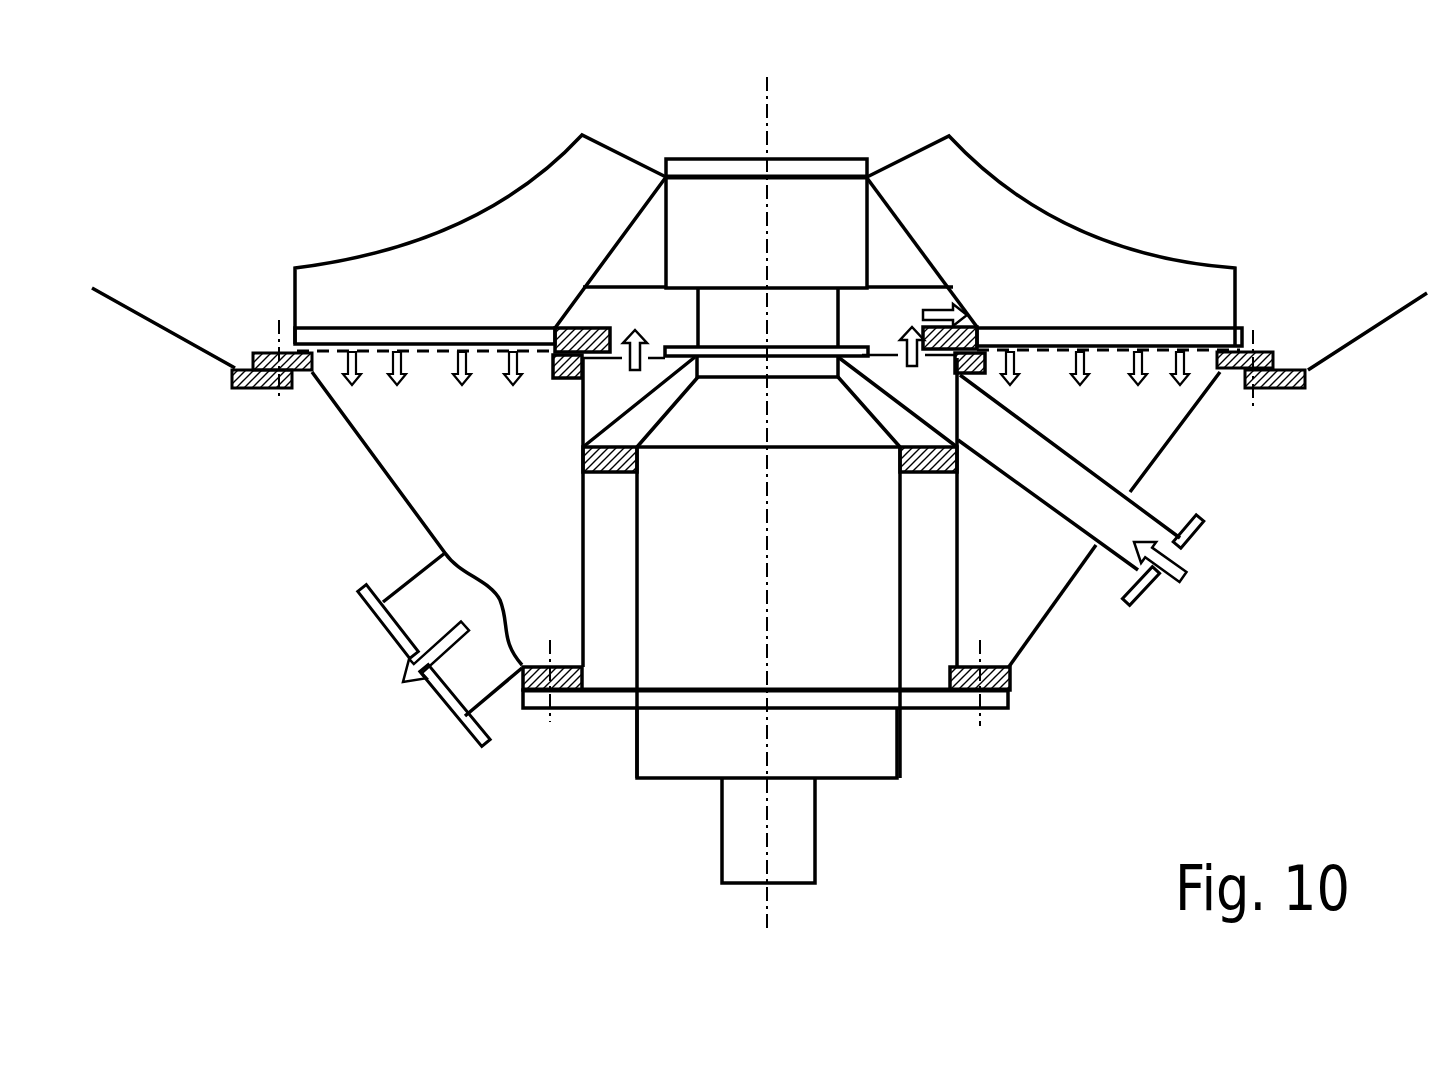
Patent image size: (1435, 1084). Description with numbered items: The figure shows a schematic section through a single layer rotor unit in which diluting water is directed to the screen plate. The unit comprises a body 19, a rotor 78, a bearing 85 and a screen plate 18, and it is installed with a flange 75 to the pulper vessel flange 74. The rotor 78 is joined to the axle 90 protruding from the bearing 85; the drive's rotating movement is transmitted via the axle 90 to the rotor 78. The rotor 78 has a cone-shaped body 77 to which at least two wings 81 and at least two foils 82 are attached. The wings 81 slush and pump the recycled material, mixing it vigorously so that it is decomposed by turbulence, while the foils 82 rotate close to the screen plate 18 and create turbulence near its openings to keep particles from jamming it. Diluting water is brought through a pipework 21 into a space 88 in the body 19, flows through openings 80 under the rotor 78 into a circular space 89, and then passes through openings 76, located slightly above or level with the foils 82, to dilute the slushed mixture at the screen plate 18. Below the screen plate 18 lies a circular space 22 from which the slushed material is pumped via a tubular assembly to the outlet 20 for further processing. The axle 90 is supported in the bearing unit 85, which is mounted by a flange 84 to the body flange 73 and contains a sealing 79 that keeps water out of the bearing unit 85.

The screen plate 18 is at (1097, 357).
The body 19 is at (1048, 615).
The outlet 20 is at (438, 585).
The pipework 21 is at (1186, 537).
The circular space 22 is at (447, 432).
The body flange 73 is at (1010, 690).
The pulper vessel flange 74 is at (1288, 392).
The flange 75 is at (1245, 365).
The openings 76 is at (963, 303).
The cone-shaped body 77 is at (903, 215).
The rotor 78 is at (768, 222).
The sealing 79 is at (725, 323).
The openings 80 is at (620, 355).
The wings 81 is at (500, 222).
The foils 82 is at (282, 322).
The flange 84 is at (617, 698).
The bearing 85 is at (700, 747).
The space 88 is at (632, 400).
The circular space 89 is at (680, 332).
The axle 90 is at (750, 813).